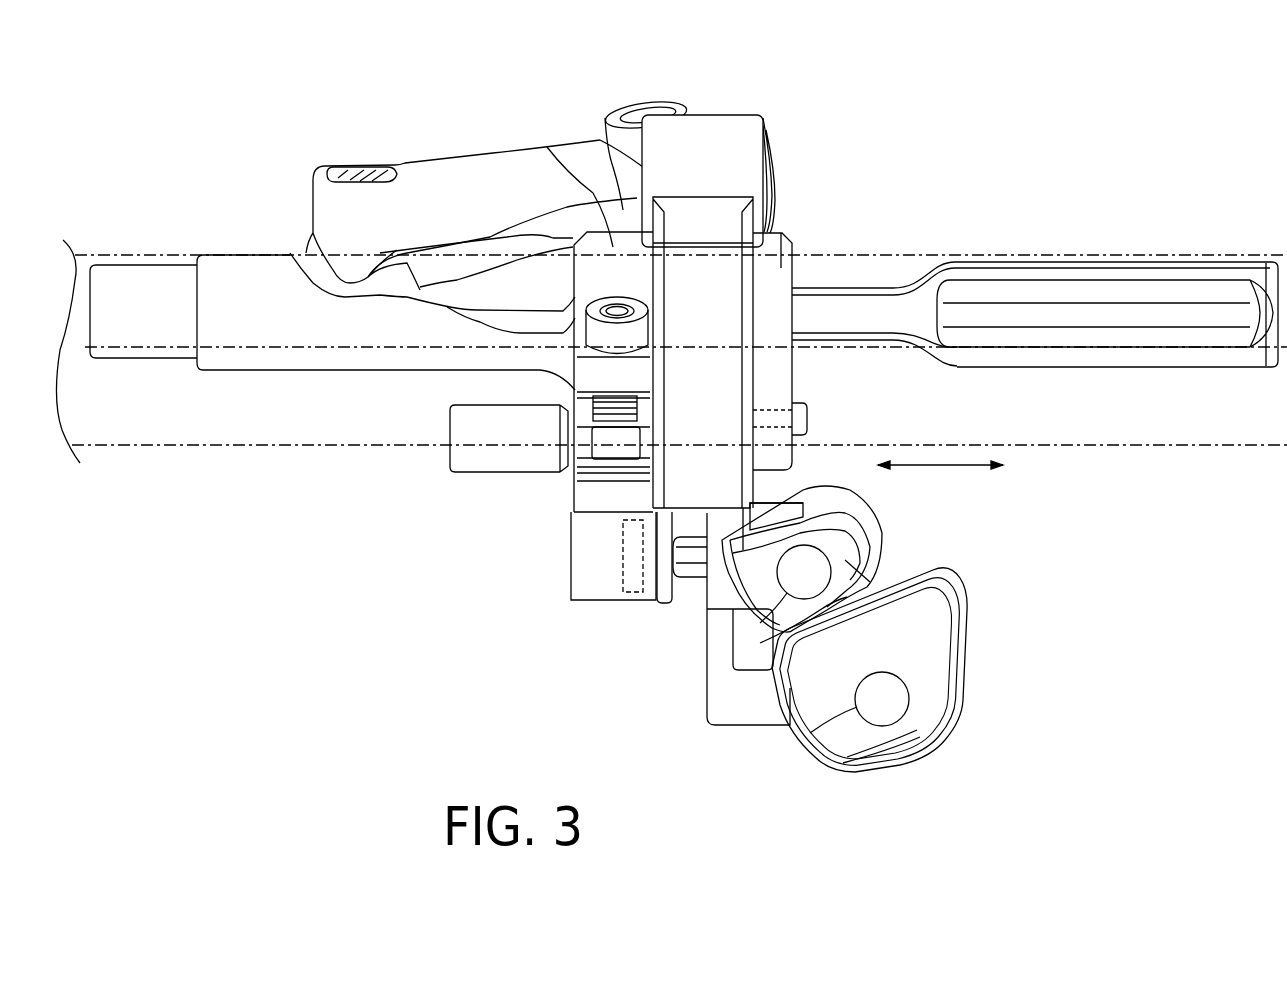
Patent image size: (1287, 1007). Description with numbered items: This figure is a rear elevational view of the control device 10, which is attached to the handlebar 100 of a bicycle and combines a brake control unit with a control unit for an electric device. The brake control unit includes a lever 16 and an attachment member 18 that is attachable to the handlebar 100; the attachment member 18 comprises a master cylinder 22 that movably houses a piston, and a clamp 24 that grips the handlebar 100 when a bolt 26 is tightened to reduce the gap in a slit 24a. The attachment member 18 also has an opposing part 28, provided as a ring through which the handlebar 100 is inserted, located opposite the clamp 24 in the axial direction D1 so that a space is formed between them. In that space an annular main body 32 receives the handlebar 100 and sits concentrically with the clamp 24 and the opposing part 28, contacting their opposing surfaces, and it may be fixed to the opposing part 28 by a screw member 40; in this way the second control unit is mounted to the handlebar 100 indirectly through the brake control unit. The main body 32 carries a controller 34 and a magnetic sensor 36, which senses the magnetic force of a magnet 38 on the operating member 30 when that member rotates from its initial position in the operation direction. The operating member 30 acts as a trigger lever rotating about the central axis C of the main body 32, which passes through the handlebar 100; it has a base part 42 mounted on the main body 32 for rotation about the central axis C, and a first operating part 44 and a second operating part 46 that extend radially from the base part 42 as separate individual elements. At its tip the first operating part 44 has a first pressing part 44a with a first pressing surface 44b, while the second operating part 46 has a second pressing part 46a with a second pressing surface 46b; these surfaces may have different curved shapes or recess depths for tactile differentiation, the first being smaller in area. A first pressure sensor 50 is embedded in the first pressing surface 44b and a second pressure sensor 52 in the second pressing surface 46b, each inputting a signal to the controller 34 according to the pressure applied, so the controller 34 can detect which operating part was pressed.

The control device 10 is at (400, 130).
The lever 16 is at (1000, 255).
The attachment member 18 is at (605, 140).
The master cylinder 22 is at (493, 167).
The clamp 24 is at (547, 147).
The slit 24a is at (560, 403).
The bolt 26 is at (585, 355).
The opposing part 28 is at (780, 233).
The operating member 30 is at (563, 618).
The annular main body 32 is at (697, 217).
The controller 34 is at (568, 528).
The magnetic sensor 36 is at (620, 547).
The magnet 38 is at (804, 492).
The screw member 40 is at (807, 420).
The base part 42 is at (655, 599).
The first operating part 44 is at (702, 582).
The first pressing part 44a is at (873, 513).
The first pressing surface 44b is at (862, 535).
The second operating part 46 is at (700, 650).
The second pressing part 46a is at (975, 640).
The second pressing surface 46b is at (927, 687).
The first pressure sensor 50 is at (767, 663).
The second pressure sensor 52 is at (850, 712).
The handlebar 100 is at (1130, 447).
The central axis C is at (833, 347).
The axial direction D1 is at (950, 465).